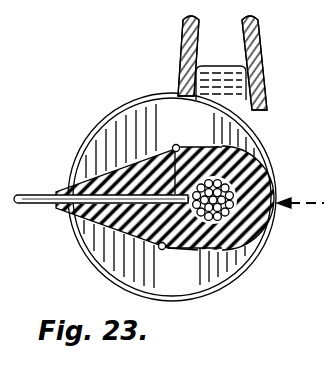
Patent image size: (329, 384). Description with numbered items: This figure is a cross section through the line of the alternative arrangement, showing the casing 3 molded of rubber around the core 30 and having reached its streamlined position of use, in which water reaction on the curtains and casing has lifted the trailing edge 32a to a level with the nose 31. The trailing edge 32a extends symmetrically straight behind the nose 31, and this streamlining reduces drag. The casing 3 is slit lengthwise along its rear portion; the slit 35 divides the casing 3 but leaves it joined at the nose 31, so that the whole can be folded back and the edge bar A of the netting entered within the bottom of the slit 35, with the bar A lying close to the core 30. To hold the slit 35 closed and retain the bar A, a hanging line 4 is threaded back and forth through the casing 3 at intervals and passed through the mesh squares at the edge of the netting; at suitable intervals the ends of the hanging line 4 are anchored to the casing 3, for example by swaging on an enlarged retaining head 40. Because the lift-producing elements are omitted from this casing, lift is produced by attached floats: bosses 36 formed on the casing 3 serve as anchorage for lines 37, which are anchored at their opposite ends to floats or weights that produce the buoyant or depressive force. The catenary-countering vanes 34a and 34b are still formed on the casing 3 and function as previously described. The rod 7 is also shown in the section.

The enlarged retaining head 40 is at (128, 2).
The lines 37 is at (183, 42).
The bosses 36 is at (217, 71).
The catenary-countering vane 34a is at (137, 114).
The catenary-countering vane 34b is at (108, 260).
The slit 35 is at (113, 194).
The trailing edge 32a is at (67, 208).
The rod 7 is at (43, 193).
The edge bar A is at (176, 151).
The nose 31 is at (273, 192).
The core 30 is at (229, 263).
The casing 3 is at (199, 250).
The hanging line 4 is at (161, 250).